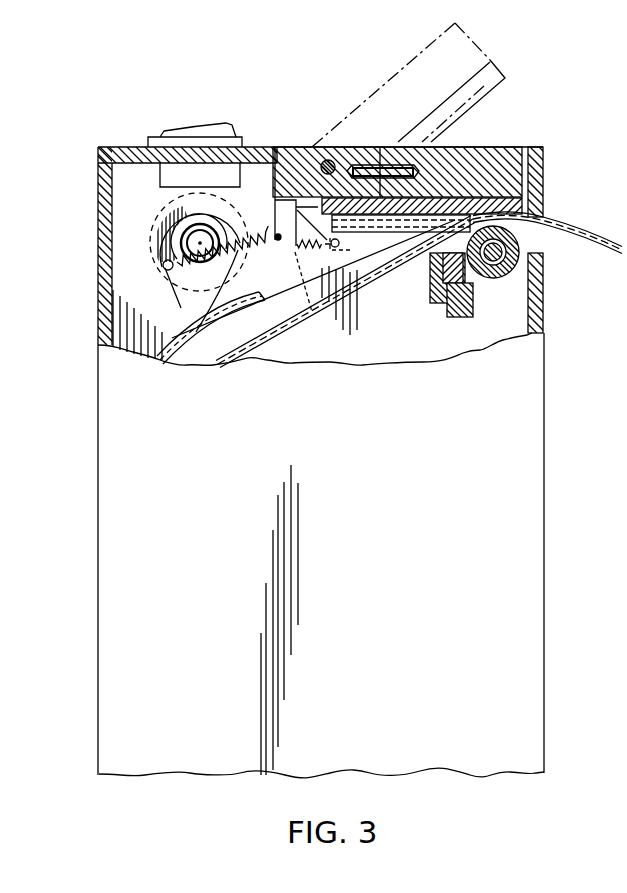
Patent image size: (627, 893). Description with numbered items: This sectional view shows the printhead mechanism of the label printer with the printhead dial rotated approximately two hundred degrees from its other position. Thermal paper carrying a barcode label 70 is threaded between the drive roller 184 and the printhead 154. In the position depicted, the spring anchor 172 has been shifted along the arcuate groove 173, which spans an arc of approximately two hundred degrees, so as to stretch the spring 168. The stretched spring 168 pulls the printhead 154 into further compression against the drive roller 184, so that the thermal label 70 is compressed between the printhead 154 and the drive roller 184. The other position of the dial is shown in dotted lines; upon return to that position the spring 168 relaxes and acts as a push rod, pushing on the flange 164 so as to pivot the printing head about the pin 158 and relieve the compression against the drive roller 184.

The barcode label 70 is at (575, 232).
The printhead 154 is at (405, 66).
The pin 158 is at (326, 160).
The flange 164 is at (272, 196).
The spring 168 is at (196, 332).
The spring anchor 172 is at (160, 254).
The arcuate groove 173 is at (158, 240).
The drive roller 184 is at (505, 262).